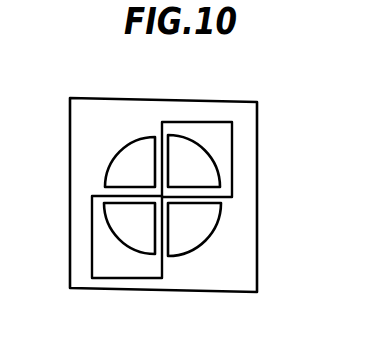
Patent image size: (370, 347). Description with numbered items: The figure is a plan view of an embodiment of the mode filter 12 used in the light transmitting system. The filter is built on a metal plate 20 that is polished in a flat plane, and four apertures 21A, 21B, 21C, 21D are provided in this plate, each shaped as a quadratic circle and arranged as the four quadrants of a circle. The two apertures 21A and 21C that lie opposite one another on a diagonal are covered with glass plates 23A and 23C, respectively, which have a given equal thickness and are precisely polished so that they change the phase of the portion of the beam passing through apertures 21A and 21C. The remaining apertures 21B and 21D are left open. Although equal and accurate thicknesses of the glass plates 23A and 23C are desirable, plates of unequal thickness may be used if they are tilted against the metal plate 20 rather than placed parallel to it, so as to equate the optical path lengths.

The mode filter 12 is at (174, 297).
The metal plate 20 is at (257, 212).
The aperture 21A is at (188, 160).
The aperture 21B is at (202, 232).
The aperture 21C is at (140, 234).
The aperture 21D is at (135, 160).
The glass plate 23A is at (232, 165).
The glass plate 23C is at (92, 233).